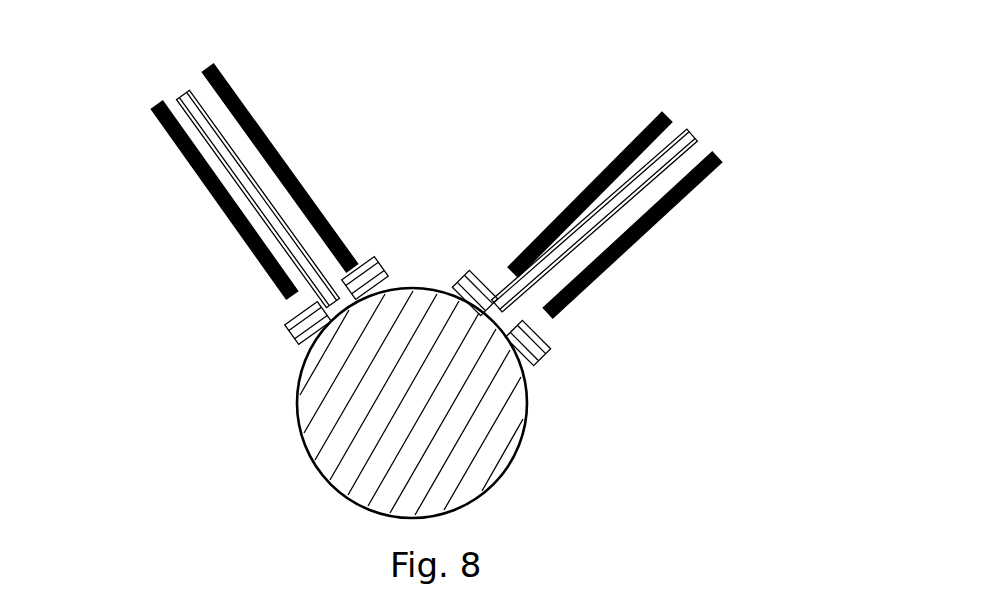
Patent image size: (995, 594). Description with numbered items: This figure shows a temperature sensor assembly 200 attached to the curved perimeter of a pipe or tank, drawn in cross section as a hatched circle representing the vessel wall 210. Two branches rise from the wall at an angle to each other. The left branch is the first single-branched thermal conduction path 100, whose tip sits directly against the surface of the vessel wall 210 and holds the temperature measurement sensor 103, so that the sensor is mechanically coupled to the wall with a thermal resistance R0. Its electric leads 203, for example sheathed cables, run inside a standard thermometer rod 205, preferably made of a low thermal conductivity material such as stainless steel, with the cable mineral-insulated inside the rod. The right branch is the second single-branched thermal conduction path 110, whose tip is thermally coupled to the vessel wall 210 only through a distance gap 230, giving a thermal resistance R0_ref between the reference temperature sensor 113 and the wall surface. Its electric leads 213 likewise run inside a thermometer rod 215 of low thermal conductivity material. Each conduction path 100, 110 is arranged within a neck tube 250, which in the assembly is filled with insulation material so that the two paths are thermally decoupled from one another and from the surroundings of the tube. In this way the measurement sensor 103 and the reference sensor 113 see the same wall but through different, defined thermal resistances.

The first single-branched thermal conduction path 100 is at (216, 173).
The temperature measurement sensor 103 is at (322, 298).
The second single-branched thermal conduction path 110 is at (639, 200).
The reference temperature sensor 113 is at (517, 309).
The temperature sensor assembly 200 is at (608, 200).
The electric leads 203 is at (253, 205).
The standard thermometer rod 205 is at (185, 127).
The vessel wall 210 is at (507, 487).
The electric leads 213 is at (597, 237).
The thermometer rod 215 is at (652, 190).
The distance gap 230 is at (493, 278).
The neck tube 250 is at (287, 165).